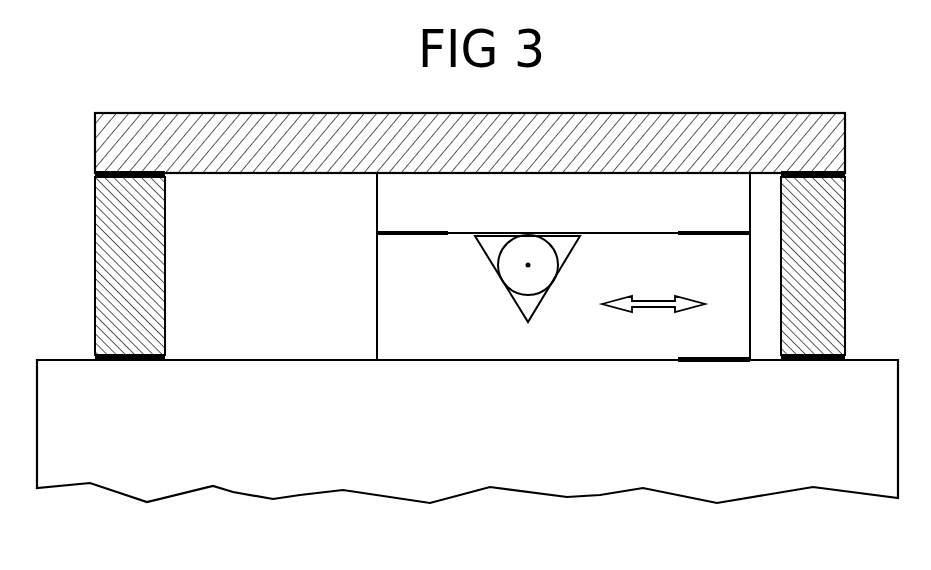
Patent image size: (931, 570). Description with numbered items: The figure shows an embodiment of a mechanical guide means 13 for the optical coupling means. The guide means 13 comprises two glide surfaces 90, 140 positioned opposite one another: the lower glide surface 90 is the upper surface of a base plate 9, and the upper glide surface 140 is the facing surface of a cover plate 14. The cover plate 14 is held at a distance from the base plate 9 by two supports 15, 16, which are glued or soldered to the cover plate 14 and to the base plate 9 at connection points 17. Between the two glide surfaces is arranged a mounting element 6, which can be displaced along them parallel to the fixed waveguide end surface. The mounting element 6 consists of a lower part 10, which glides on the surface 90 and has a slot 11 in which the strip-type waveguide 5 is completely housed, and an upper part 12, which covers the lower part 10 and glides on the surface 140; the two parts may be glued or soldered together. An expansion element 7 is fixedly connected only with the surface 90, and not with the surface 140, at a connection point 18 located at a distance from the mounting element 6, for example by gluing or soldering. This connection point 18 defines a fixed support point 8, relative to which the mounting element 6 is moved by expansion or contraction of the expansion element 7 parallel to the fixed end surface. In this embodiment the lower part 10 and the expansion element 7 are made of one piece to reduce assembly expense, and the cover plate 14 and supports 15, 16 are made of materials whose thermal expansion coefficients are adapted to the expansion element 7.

The guide means 13 is at (470, 88).
The cover plate 14 is at (285, 130).
The upper part 12 is at (722, 190).
The support 15 is at (106, 249).
The support 16 is at (825, 242).
The connection points 17 is at (98, 168).
The glide surface of cover plate 140 is at (310, 176).
The glide surface of base plate 90 is at (236, 358).
The base plate 9 is at (248, 452).
The lower part 10 is at (563, 320).
The slot 11 is at (525, 305).
The strip-type waveguide 5 is at (506, 266).
The connection point 18 is at (692, 362).
The expansion element 7 is at (418, 342).
The mounting element 6 is at (523, 372).
The fixed support point 8 is at (726, 367).